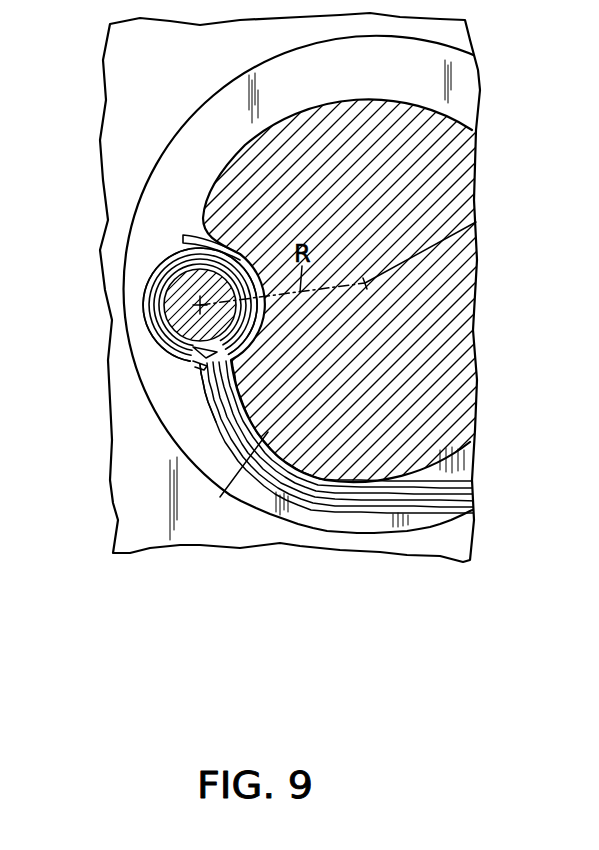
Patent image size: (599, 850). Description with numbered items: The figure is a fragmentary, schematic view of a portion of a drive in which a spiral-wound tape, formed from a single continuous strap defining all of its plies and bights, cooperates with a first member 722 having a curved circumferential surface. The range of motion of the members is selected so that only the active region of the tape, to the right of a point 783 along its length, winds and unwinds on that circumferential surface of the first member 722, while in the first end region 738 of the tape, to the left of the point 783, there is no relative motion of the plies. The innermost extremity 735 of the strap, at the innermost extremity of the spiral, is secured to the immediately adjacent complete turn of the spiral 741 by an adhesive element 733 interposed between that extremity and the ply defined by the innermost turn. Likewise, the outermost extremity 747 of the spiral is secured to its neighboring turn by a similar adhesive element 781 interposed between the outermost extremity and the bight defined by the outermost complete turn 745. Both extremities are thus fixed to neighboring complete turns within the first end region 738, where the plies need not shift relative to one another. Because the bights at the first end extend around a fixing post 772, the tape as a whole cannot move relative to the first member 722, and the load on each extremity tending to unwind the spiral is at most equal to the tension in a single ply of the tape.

The first member 722 is at (273, 160).
The outermost extremity of the spiral 747 is at (187, 235).
The adhesive element 781 is at (175, 260).
The outermost complete turn 745 is at (160, 272).
The fixing post 772 is at (175, 296).
The innermost extremity of the strap 735 is at (193, 348).
The adhesive element 733 is at (200, 366).
The first end region of the tape 738 is at (146, 418).
The immediately adjacent complete turn of the spiral 741 is at (203, 366).
The point along the length of the tape 783 is at (232, 480).